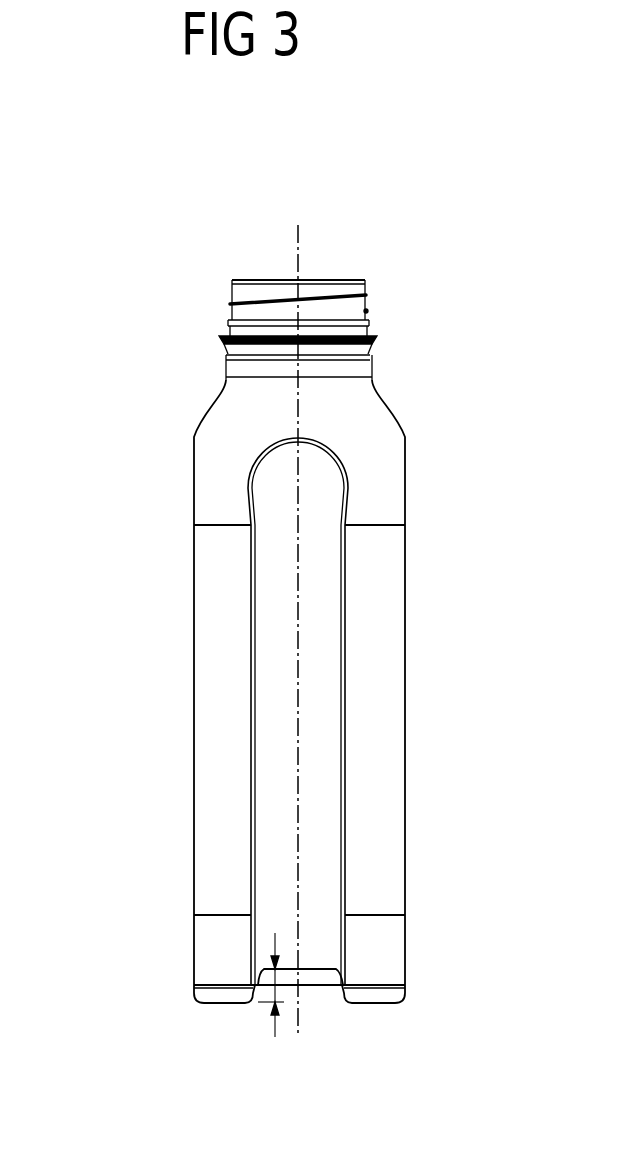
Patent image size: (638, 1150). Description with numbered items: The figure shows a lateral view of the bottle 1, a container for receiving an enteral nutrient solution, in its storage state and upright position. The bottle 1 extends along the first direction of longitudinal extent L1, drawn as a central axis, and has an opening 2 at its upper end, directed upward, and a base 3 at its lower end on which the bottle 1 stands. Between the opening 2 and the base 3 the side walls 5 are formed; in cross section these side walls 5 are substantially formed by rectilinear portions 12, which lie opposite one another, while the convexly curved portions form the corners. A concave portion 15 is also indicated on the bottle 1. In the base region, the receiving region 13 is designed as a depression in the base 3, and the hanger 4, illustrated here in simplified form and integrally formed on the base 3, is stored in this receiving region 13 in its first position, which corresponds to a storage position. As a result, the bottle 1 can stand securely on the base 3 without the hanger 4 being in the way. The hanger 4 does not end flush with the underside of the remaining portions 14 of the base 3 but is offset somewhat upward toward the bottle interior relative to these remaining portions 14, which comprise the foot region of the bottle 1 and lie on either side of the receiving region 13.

The bottle 1 is at (130, 507).
The opening 2 is at (316, 261).
The base 3 is at (387, 992).
The hanger 4 is at (318, 980).
The side walls 5 is at (175, 1000).
The rectilinear portion 12 is at (325, 668).
The receiving region 13 is at (339, 1037).
The remaining portions of the base 14 is at (256, 1037).
The concave portion 15 is at (330, 940).
The first direction of longitudinal extent L1 is at (297, 252).